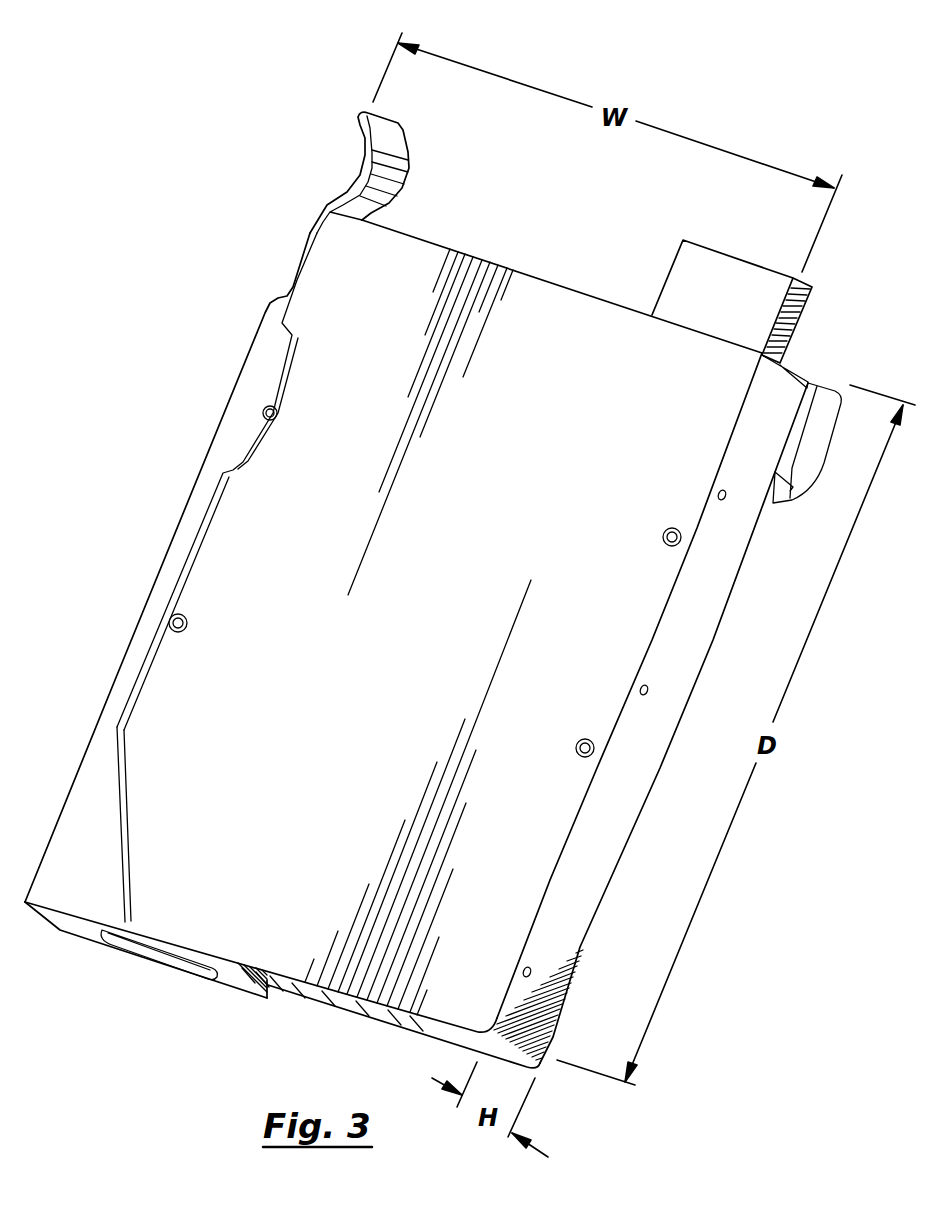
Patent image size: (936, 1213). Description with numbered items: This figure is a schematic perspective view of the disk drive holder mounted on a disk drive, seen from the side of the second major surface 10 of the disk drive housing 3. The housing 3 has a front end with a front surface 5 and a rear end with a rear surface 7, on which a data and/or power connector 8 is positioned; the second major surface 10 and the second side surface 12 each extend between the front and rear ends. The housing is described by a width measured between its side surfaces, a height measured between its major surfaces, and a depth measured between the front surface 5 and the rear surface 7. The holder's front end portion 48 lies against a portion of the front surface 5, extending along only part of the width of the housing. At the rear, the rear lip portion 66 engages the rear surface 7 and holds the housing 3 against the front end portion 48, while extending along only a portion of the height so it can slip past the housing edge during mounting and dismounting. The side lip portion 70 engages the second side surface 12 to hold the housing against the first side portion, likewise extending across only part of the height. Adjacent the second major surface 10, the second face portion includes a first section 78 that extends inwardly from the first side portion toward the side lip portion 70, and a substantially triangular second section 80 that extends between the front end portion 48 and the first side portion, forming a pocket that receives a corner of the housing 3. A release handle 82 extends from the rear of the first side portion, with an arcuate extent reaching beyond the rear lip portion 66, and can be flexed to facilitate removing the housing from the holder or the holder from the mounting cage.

The disk drive housing 3 is at (290, 903).
The front surface 5 is at (408, 1020).
The rear surface 7 is at (528, 273).
The data and/or power connector 8 is at (741, 268).
The second major surface 10 is at (540, 808).
The second side surface 12 is at (625, 778).
The front end portion 48 is at (92, 930).
The rear lip portion 66 is at (803, 375).
The side lip portion 70 is at (802, 438).
The first section of the second face portion 78 is at (252, 405).
The second section of the second face portion 80 is at (97, 842).
The release handle 82 is at (372, 155).